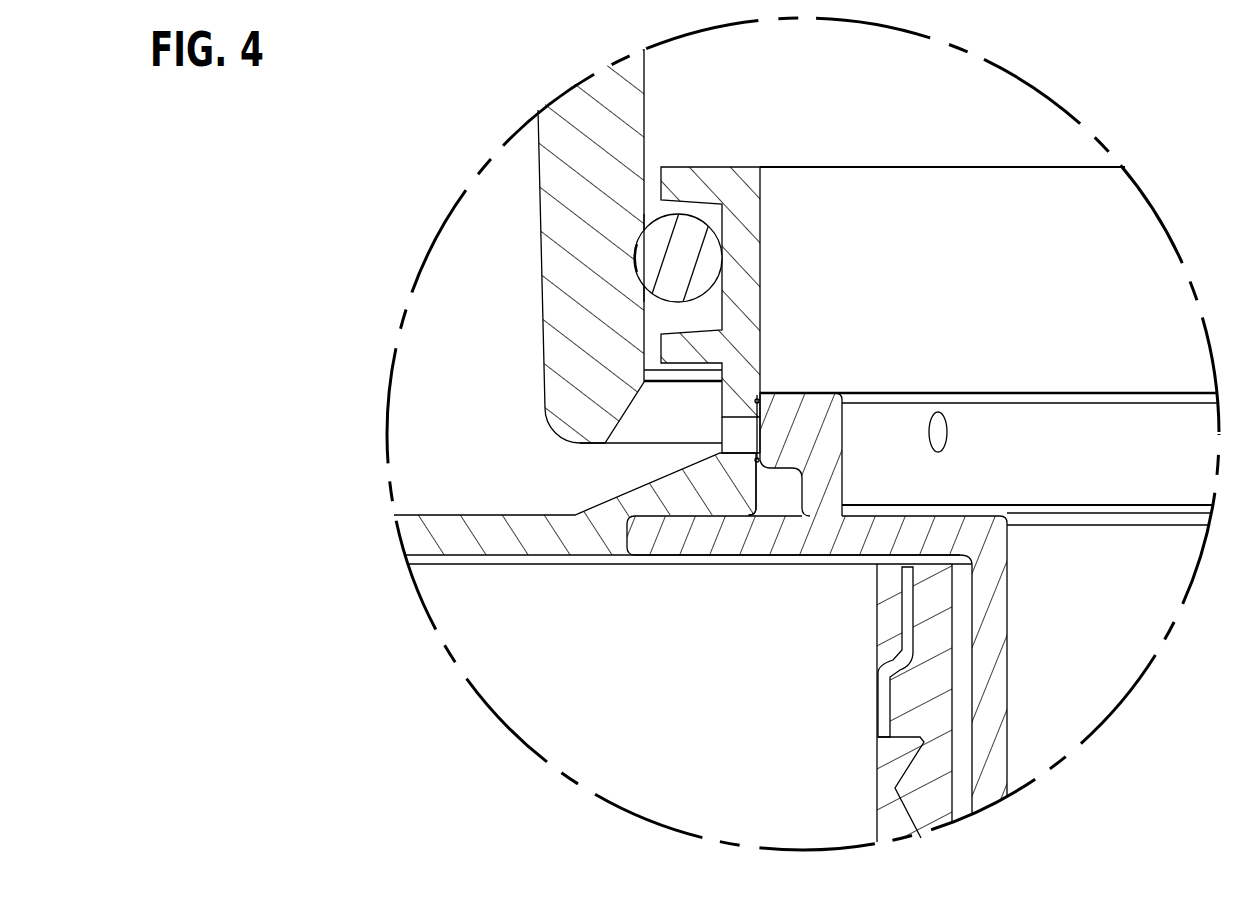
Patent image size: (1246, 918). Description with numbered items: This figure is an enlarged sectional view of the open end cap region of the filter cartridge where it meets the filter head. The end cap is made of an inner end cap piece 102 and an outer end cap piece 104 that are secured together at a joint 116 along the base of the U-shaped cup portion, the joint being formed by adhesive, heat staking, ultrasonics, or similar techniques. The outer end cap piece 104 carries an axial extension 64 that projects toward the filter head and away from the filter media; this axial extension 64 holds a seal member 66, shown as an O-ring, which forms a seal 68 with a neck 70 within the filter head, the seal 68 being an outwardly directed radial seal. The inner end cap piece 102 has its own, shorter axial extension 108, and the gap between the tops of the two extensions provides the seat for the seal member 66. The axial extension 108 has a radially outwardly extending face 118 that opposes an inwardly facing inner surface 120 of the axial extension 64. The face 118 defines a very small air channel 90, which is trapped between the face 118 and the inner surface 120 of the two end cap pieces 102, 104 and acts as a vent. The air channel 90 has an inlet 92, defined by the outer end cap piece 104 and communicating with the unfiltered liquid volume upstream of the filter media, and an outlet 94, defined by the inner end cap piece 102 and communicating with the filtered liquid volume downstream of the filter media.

The axial extension 64 is at (748, 167).
The seal member 66 is at (713, 260).
The seal 68 is at (633, 258).
The neck 70 is at (540, 200).
The air channel 90 is at (761, 392).
The inlet 92 is at (747, 417).
The outlet 94 is at (949, 430).
The inner end cap piece 102 is at (1000, 665).
The outer end cap piece 104 is at (468, 538).
The axial extension 108 is at (1077, 430).
The joint 116 is at (626, 538).
The radially outwardly extending face 118 is at (766, 438).
The inwardly facing inner surface 120 is at (764, 492).